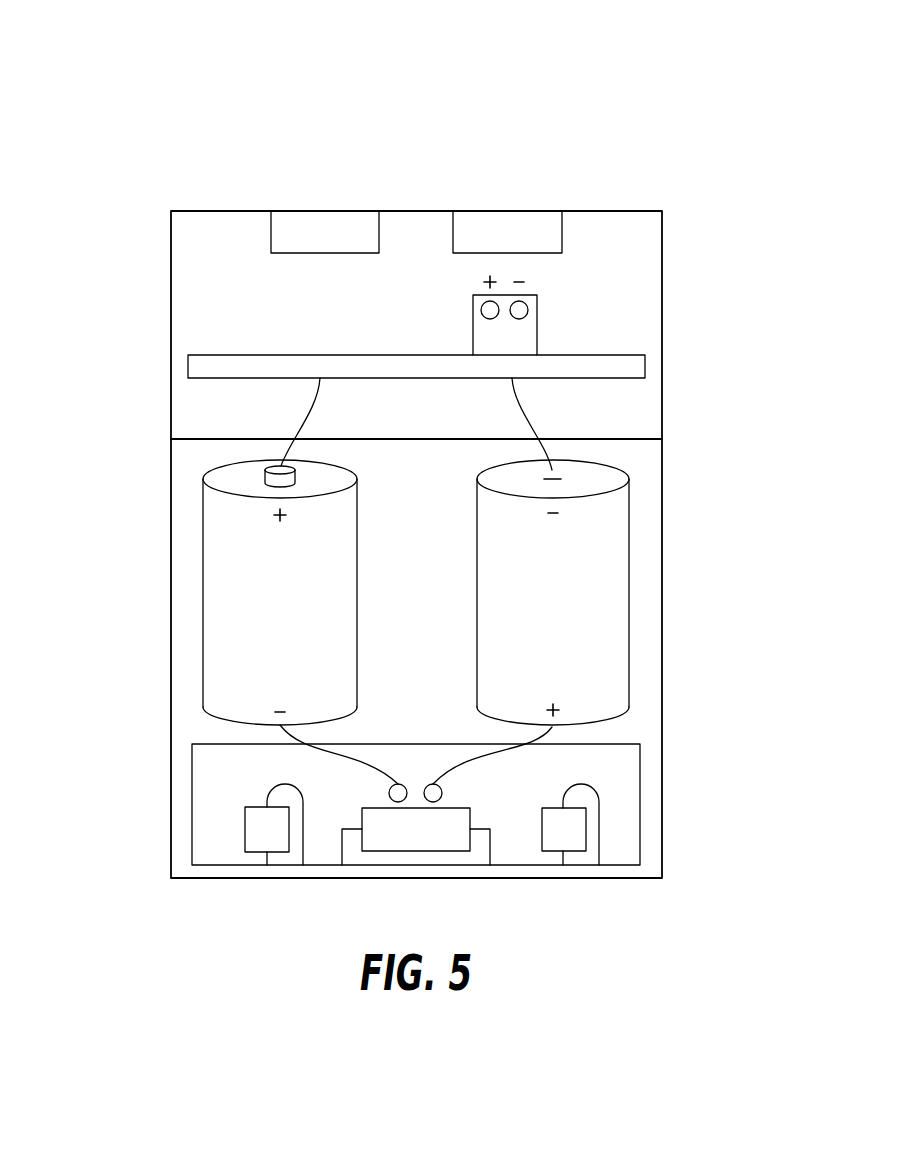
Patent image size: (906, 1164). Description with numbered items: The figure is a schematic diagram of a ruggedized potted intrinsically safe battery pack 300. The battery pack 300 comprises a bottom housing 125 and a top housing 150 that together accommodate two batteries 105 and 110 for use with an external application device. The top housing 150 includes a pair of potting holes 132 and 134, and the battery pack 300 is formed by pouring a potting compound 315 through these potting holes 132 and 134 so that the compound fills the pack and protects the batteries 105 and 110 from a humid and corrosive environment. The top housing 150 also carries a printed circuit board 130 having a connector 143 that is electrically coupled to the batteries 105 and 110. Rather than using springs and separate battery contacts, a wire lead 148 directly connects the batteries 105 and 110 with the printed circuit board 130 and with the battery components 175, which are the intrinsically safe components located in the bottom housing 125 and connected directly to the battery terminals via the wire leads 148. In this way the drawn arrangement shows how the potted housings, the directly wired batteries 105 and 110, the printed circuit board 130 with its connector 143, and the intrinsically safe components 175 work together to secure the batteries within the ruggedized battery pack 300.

The ruggedized potted intrinsically safe battery pack 300 is at (184, 70).
The battery 105 is at (203, 637).
The battery 110 is at (628, 637).
The bottom housing 125 is at (662, 298).
The printed circuit board 130 is at (645, 367).
The potting hole 132 is at (325, 210).
The potting hole 134 is at (507, 210).
The connector 143 is at (473, 325).
The wire lead 148 is at (503, 393).
The top housing 150 is at (662, 535).
The intrinsically safe components 175 is at (625, 824).
The potting compound 315 is at (190, 293).